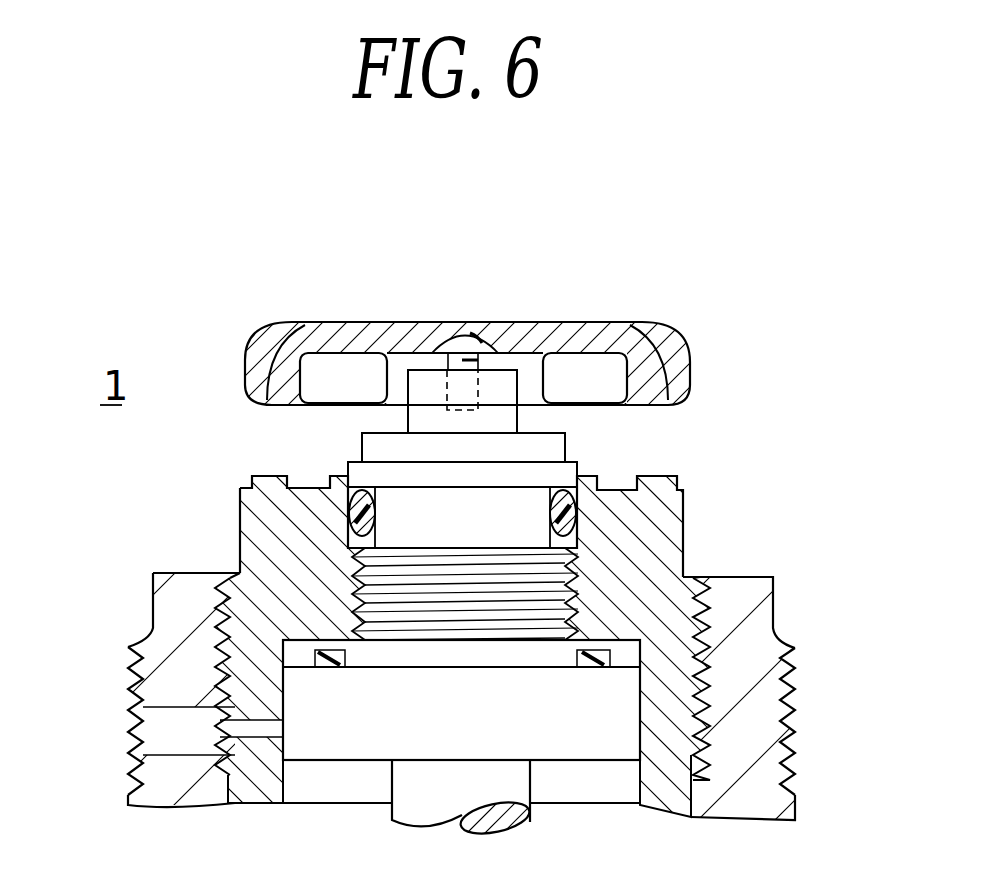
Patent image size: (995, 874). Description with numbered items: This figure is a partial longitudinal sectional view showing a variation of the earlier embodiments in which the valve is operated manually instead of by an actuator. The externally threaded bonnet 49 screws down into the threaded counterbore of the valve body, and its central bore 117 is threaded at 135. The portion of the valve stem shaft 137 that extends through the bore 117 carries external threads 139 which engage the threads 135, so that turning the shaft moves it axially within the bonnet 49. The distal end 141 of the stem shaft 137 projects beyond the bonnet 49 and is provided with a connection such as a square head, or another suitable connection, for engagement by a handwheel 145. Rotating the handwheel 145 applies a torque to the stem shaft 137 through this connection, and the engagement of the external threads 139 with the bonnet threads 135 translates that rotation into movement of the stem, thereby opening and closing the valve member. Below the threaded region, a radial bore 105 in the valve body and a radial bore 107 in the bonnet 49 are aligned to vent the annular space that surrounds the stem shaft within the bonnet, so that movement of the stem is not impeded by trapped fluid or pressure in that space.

The bonnet 49 is at (272, 517).
The radial bore in the valve body 105 is at (167, 712).
The radial bore in the bonnet 107 is at (280, 735).
The central bore 117 is at (580, 603).
The threads 135 is at (352, 595).
The valve stem shaft 137 is at (447, 660).
The external threads 139 is at (580, 553).
The distal end 141 is at (497, 400).
The handwheel 145 is at (702, 351).